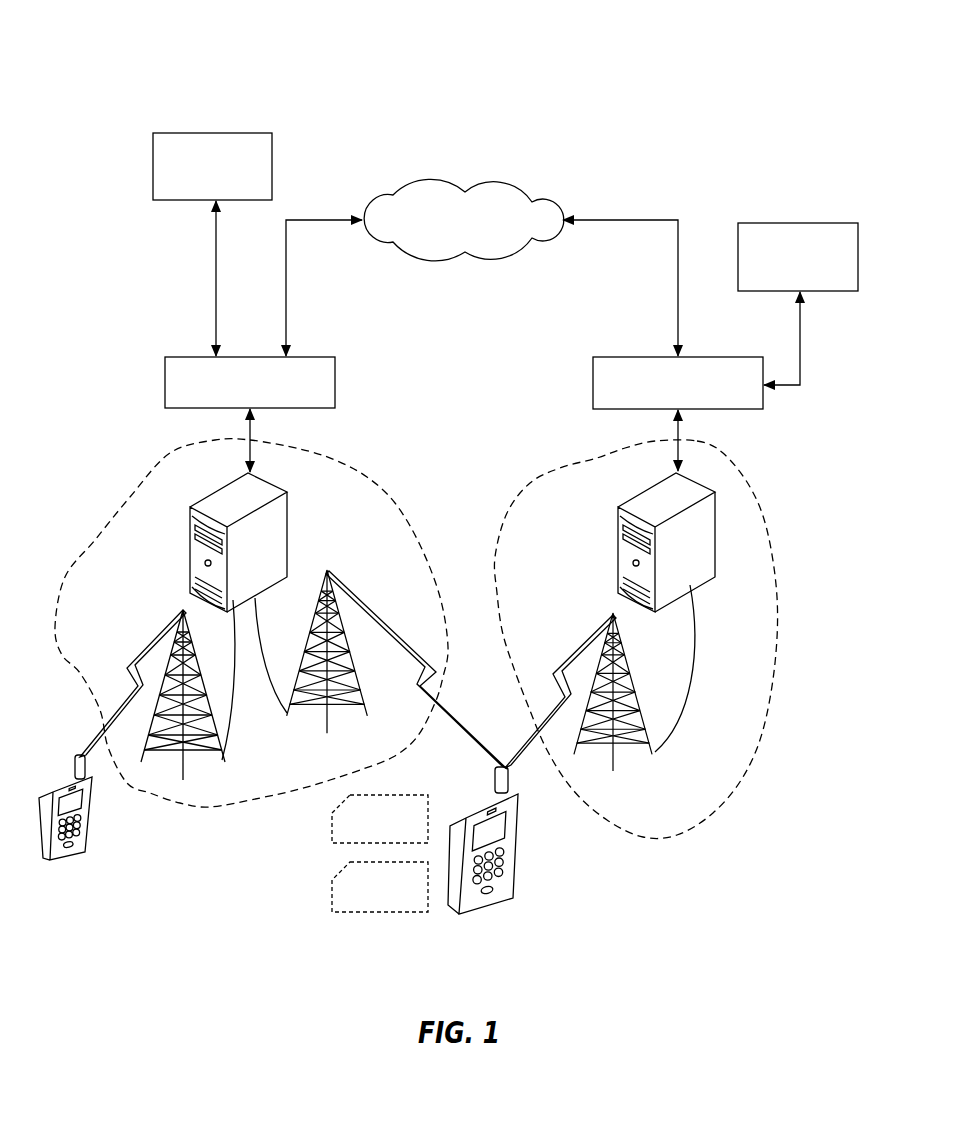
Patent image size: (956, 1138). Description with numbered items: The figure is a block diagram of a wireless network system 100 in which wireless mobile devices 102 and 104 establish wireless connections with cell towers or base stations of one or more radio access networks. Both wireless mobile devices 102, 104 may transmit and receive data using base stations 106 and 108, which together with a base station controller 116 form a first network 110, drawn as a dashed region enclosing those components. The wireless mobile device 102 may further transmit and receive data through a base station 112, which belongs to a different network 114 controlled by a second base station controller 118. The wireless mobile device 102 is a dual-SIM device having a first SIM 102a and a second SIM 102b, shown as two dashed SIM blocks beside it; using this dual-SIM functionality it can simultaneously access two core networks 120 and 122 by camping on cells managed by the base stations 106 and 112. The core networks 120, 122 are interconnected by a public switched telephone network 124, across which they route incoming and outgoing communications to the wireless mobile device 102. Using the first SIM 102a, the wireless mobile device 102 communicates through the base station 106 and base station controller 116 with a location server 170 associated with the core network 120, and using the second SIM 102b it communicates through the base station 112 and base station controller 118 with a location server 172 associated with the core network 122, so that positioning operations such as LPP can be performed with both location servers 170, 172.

The wireless network system 100 is at (740, 46).
The wireless mobile device 102 is at (492, 912).
The first SIM-1 102a is at (332, 826).
The second SIM-2 102b is at (332, 893).
The wireless mobile device 104 is at (78, 860).
The base station 106 is at (326, 727).
The base station 108 is at (189, 773).
The network 110 is at (377, 485).
The base station 112 is at (621, 764).
The network 114 is at (591, 462).
The base station controller (BSC) 116 is at (218, 492).
The base station controller (BSC) 118 is at (618, 527).
The core network 120 is at (200, 357).
The core network 122 is at (648, 357).
The public switched telephone network (PSTN) 124 is at (494, 182).
The location server 170 is at (212, 133).
The location server 172 is at (795, 223).